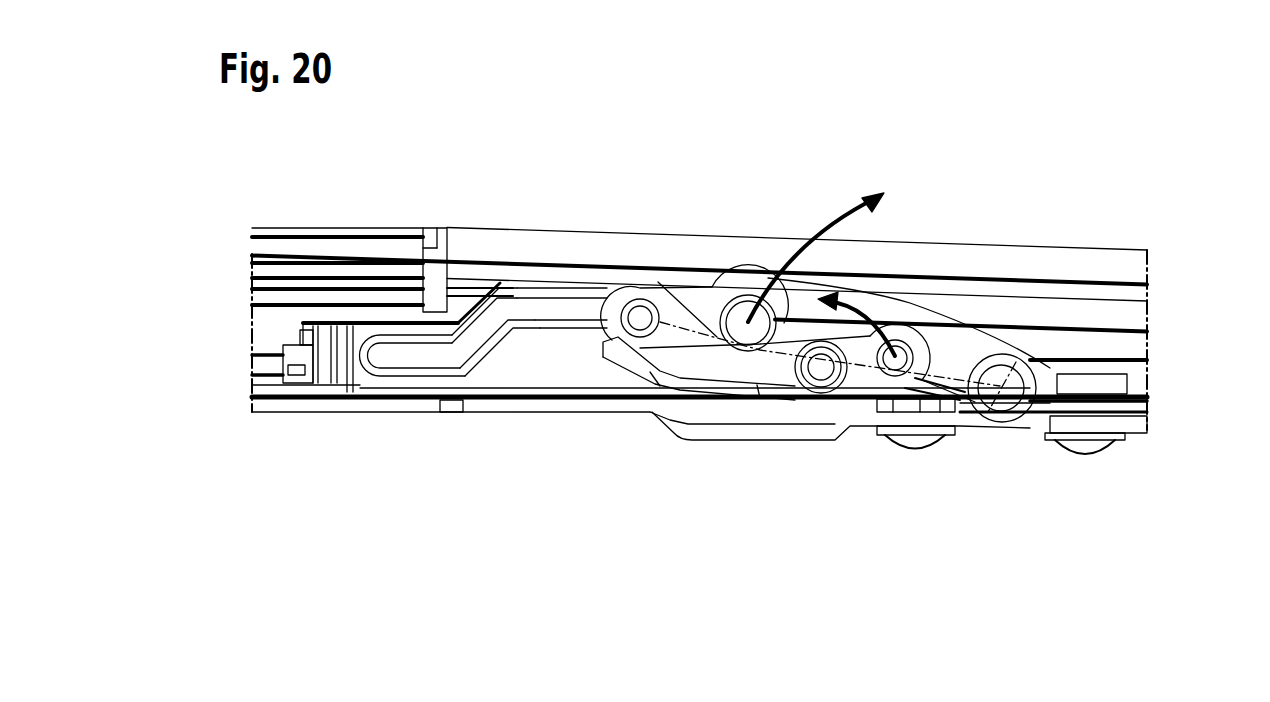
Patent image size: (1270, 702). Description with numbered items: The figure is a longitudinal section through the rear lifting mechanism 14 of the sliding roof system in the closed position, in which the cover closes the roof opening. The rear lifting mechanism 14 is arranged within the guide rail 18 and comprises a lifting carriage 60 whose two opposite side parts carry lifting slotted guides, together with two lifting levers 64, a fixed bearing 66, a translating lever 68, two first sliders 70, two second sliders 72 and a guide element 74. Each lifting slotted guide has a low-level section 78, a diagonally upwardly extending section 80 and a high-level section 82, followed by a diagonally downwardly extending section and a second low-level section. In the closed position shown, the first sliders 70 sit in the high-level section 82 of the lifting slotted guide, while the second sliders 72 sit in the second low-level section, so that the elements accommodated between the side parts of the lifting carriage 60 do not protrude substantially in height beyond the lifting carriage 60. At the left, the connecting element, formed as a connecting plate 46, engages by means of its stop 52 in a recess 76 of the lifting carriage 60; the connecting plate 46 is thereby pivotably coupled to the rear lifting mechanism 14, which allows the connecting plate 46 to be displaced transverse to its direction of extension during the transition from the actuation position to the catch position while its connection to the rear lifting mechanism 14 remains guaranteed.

The rear lifting mechanism 14 is at (795, 163).
The guide rail 18 is at (1133, 343).
The connecting plate 46 is at (275, 395).
The stop 52 is at (322, 376).
The lifting carriage 60 is at (497, 378).
The lifting lever 64 is at (978, 356).
The fixed bearing 66 is at (1046, 470).
The translating lever 68 is at (723, 367).
The first slider 70 is at (637, 310).
The second slider 72 is at (817, 375).
The guide element 74 is at (693, 292).
The recess 76 is at (320, 350).
The low-level section 78 is at (407, 355).
The diagonally upwardly extending section 80 is at (513, 312).
The high-level section 82 is at (565, 312).